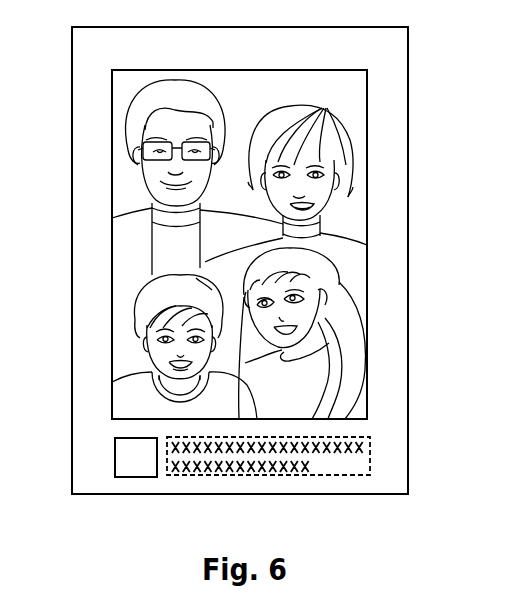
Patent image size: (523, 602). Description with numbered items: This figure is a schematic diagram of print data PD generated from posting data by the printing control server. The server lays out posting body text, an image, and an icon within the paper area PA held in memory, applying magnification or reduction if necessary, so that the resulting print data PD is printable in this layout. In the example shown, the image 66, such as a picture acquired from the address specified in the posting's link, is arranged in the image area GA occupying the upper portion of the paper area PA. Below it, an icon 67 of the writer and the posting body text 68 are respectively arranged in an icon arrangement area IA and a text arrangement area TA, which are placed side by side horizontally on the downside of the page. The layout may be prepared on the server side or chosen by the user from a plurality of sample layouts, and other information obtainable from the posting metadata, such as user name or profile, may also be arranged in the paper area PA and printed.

The print data PD is at (409, 142).
The paper area PA is at (72, 163).
The image area GA is at (112, 262).
The icon arrangement area IA is at (95, 485).
The text arrangement area TA is at (315, 482).
The image 66 is at (367, 207).
The icon 67 is at (135, 477).
The posting body text 68 is at (332, 464).